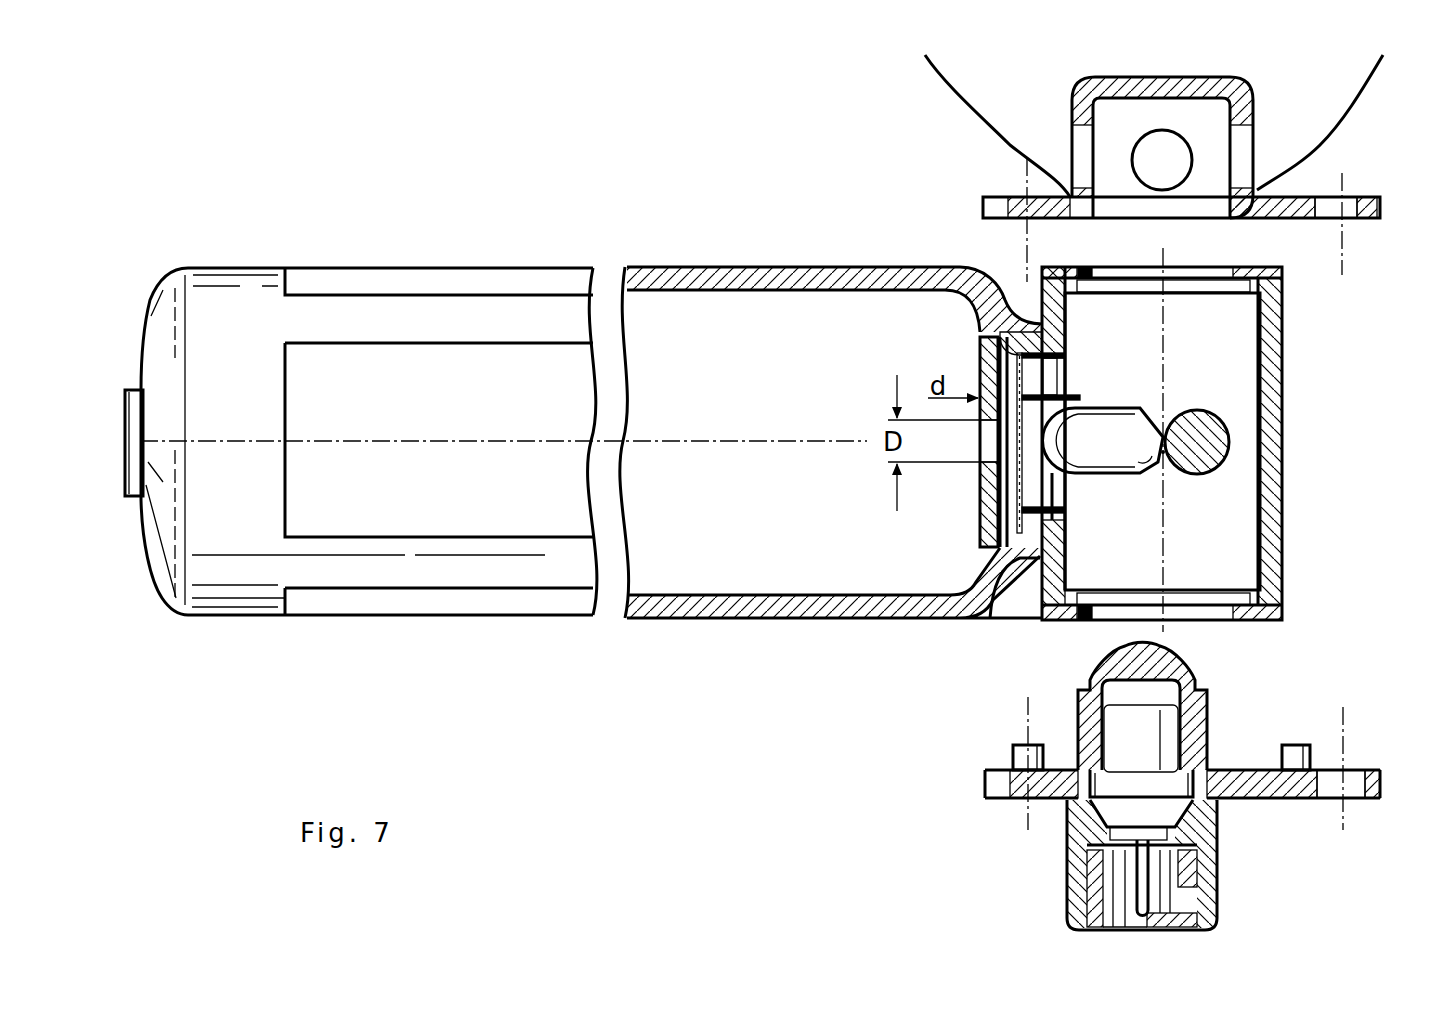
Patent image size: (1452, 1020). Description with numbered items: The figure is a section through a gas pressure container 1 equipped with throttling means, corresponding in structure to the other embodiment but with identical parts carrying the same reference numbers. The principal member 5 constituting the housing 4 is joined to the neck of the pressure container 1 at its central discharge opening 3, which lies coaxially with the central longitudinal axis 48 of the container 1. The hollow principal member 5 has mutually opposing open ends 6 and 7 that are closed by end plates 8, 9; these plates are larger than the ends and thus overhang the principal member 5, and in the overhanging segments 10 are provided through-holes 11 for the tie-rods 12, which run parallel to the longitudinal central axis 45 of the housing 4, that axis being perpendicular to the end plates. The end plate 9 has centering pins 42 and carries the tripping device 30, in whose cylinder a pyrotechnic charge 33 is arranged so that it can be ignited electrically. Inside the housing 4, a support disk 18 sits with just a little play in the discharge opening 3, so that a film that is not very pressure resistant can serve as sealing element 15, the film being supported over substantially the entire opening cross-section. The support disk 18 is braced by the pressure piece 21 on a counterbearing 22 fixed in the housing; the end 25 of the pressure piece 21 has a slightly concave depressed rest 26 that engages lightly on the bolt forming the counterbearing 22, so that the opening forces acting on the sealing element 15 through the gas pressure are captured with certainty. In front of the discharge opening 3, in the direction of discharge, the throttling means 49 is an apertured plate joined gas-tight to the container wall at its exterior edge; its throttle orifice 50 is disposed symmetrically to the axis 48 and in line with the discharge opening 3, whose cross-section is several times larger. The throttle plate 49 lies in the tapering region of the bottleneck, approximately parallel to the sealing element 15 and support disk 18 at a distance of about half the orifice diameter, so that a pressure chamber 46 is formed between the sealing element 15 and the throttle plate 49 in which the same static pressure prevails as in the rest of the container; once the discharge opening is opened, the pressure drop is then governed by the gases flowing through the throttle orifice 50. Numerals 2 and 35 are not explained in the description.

The pressure container 1 is at (732, 327).
The mounting wall 2 is at (960, 95).
The discharge opening 3 is at (977, 553).
The housing 4 is at (1284, 378).
The principal member 5 is at (1270, 537).
The open end 6 is at (1231, 265).
The open end 7 is at (1226, 627).
The end plate 8 is at (1224, 66).
The end plate 9 is at (1253, 760).
The overhanging segment 10 is at (980, 197).
The through-hole 11 is at (1357, 224).
The tie-rod 12 is at (1023, 226).
The sealing element 15 is at (994, 514).
The support disk 18 is at (1067, 382).
The pressure piece 21 is at (1123, 422).
The counterbearing 22 is at (1205, 406).
The end of pressure piece 25 is at (1163, 465).
The depressed rest 26 is at (1156, 438).
The tripping device 30 is at (1226, 870).
The pyrotechnic charge 33 is at (1150, 743).
The cap window 35 is at (1083, 150).
The centering pin 42 is at (1017, 757).
The longitudinal central axis of housing 45 is at (1165, 260).
The pressure chamber 46 is at (1007, 362).
The central longitudinal axis 48 is at (378, 440).
The throttle plate 49 is at (978, 347).
The throttle orifice 50 is at (982, 440).